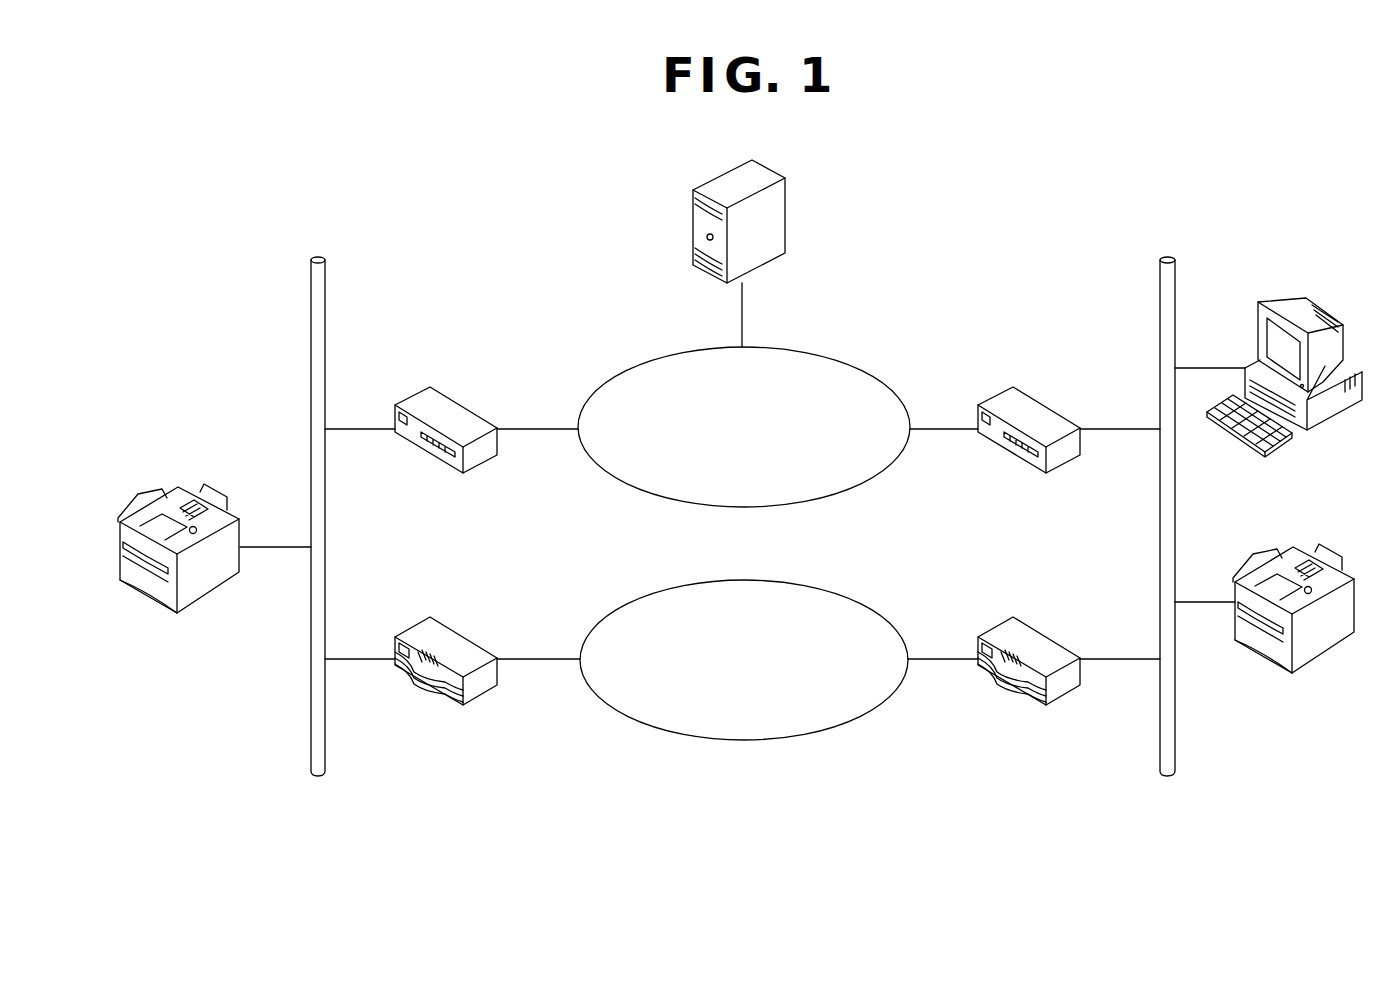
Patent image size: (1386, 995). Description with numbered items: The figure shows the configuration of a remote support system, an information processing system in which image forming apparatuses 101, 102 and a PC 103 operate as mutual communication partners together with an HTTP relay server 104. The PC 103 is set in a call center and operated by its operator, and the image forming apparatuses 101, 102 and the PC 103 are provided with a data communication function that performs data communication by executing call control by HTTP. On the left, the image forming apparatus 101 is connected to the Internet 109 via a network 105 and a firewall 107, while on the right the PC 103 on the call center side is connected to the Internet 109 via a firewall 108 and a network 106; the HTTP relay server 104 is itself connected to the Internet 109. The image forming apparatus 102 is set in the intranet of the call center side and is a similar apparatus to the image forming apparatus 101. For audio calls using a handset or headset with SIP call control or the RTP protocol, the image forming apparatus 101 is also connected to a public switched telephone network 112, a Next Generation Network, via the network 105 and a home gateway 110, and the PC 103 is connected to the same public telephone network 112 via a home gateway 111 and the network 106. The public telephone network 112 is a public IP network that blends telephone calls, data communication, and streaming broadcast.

The image forming apparatus 101 is at (148, 494).
The image forming apparatus 102 is at (1319, 660).
The PC 103 is at (1271, 298).
The HTTP relay server 104 is at (789, 201).
The network 105 is at (316, 256).
The network 106 is at (1167, 256).
The firewall (FW) 107 is at (456, 401).
The FW 108 is at (1040, 400).
The Internet 109 is at (806, 352).
The home gateway (HGW) 110 is at (456, 631).
The HGW 111 is at (1040, 630).
The public switched telephone network (NGN) 112 is at (806, 582).